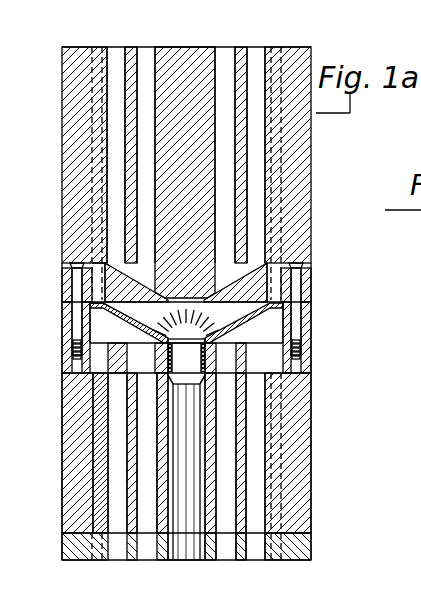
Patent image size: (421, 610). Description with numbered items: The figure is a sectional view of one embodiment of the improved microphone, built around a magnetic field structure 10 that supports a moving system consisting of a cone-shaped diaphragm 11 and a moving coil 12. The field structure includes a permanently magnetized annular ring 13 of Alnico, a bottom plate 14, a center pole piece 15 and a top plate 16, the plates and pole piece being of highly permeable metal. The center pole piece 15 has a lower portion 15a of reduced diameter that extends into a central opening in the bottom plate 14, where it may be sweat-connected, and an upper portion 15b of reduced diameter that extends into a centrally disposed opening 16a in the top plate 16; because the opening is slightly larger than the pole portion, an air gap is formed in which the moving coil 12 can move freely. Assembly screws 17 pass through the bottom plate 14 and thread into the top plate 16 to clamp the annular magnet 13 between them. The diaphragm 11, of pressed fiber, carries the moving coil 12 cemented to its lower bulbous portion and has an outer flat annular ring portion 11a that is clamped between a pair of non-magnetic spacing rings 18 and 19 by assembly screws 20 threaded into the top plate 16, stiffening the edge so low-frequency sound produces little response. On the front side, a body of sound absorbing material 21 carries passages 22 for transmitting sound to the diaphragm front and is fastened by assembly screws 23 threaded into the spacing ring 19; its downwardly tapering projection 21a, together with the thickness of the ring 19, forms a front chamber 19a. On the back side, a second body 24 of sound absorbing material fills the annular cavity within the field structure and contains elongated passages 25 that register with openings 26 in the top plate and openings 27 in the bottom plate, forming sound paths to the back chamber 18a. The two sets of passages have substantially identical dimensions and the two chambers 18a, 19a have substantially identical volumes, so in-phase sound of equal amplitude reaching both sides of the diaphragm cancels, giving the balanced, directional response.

The magnetic field structure 10 is at (203, 411).
The cone-shaped diaphragm 11 is at (300, 318).
The outer flat annular ring portion 11a is at (92, 315).
The moving coil 12 is at (160, 338).
The permanently magnetized annular ring 13 is at (311, 510).
The bottom plate 14 is at (311, 548).
The center pole piece 15 is at (178, 460).
The lower portion of reduced diameter 15a is at (192, 560).
The upper portion of reduced diameter 15b is at (208, 343).
The top plate 16 is at (305, 366).
The centrally disposed opening 16a is at (305, 388).
The assembly screws 17 is at (103, 560).
The annular spacing ring 18 is at (62, 328).
The chamber on back side of diaphragm 18a is at (311, 345).
The annular spacing ring 19 is at (311, 292).
The chamber on front side of diaphragm 19a is at (107, 265).
The assembly screws 20 is at (73, 282).
The body of sound absorbing material 21 is at (311, 220).
The downwardly tapering projection 21a is at (100, 296).
The passages 22 is at (257, 53).
The assembly screws 23 is at (98, 50).
The second body of sound absorbing material 24 is at (94, 438).
The elongated passages 25 is at (262, 468).
The openings 26 is at (118, 365).
The openings 27 is at (258, 560).